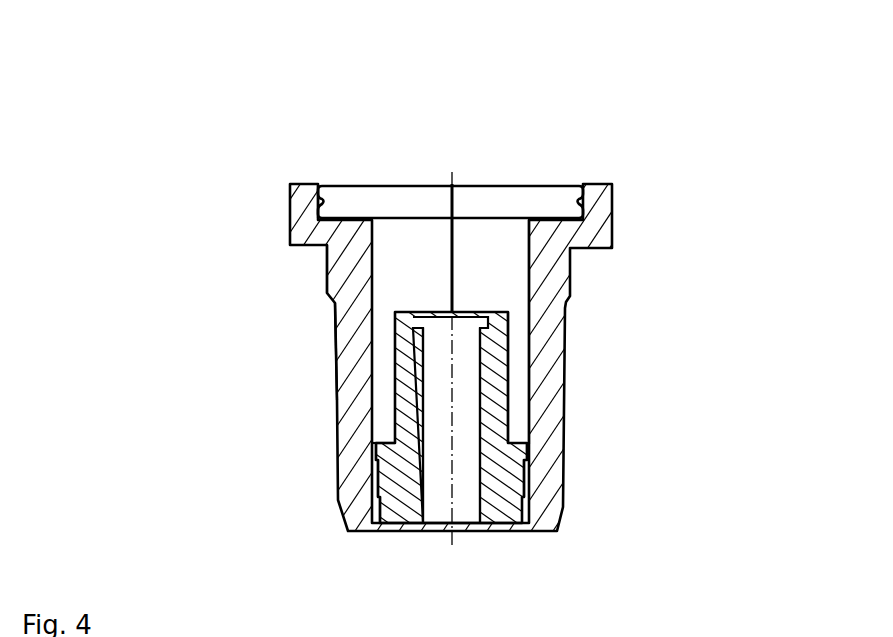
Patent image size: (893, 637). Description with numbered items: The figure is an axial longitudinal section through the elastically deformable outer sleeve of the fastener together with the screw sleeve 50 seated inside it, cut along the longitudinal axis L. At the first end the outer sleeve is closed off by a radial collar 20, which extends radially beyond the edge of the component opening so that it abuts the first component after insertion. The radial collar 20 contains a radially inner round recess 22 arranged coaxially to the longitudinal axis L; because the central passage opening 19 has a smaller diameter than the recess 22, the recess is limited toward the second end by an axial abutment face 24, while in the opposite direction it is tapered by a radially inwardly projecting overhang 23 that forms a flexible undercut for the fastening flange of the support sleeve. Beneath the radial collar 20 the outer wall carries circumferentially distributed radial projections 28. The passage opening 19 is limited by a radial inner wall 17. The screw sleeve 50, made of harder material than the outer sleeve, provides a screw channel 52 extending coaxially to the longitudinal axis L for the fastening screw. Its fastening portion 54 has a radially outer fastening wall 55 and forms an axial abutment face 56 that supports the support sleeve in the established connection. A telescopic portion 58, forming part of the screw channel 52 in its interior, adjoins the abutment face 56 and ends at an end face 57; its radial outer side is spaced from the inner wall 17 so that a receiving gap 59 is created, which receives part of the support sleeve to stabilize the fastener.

The radial collar 20 is at (614, 221).
The recess 22 is at (545, 202).
The overhang 23 is at (321, 190).
The axial abutment face 24 is at (350, 215).
The end face 57 is at (407, 310).
The longitudinal axis L is at (457, 168).
The central passage opening 19 is at (507, 283).
The radial projections 28 is at (327, 273).
The radial inner wall 17 is at (336, 318).
The telescopic portion 58 is at (393, 363).
The axial abutment face 56 is at (373, 440).
The receiving gap 59 is at (518, 385).
The screw sleeve 50 is at (500, 460).
The fastening portion 54 is at (377, 475).
The fastening wall 55 is at (377, 492).
The screw channel 52 is at (470, 483).